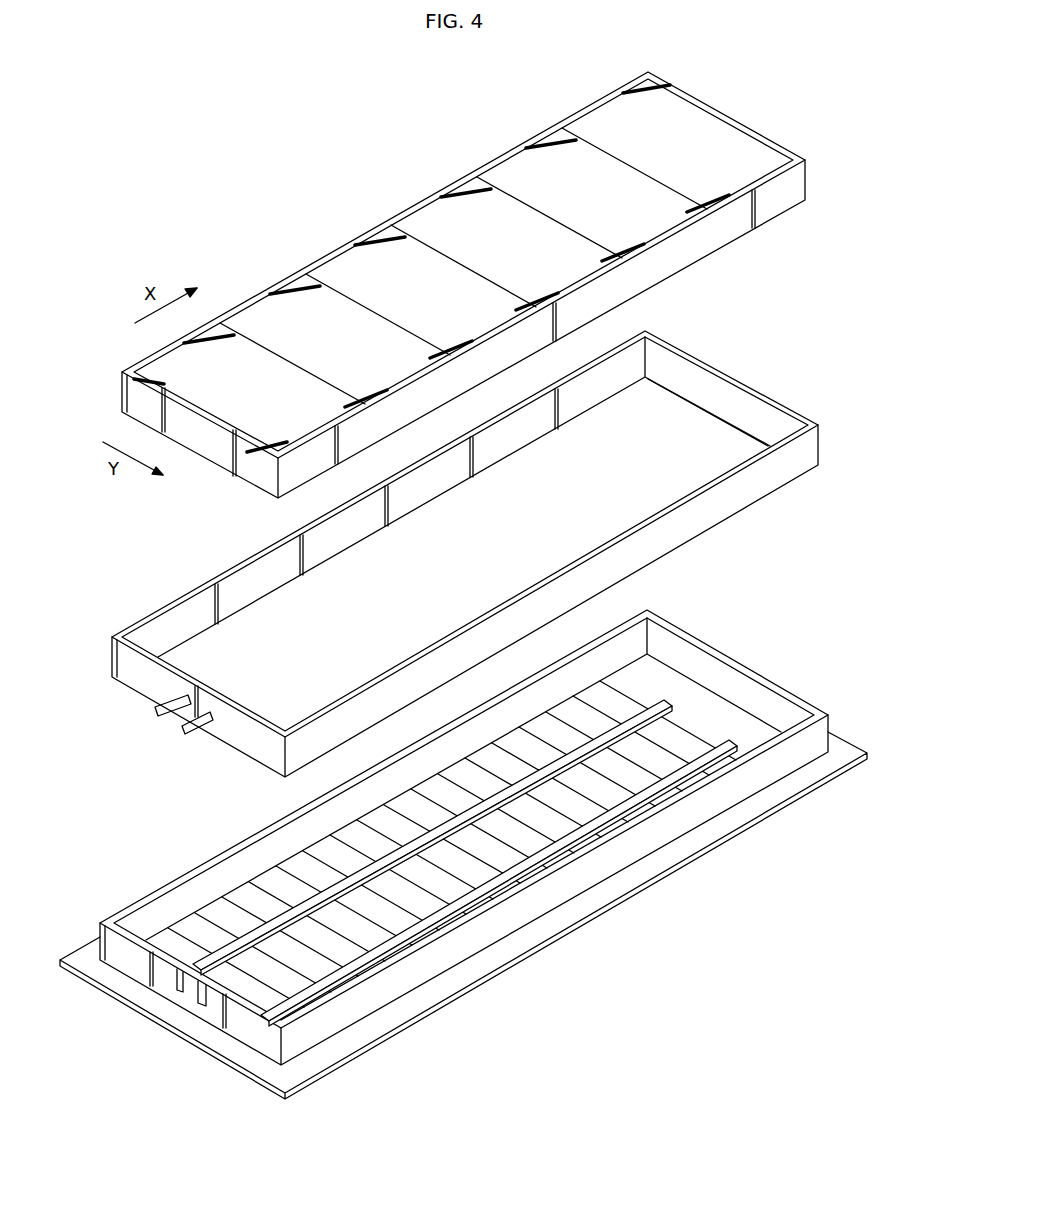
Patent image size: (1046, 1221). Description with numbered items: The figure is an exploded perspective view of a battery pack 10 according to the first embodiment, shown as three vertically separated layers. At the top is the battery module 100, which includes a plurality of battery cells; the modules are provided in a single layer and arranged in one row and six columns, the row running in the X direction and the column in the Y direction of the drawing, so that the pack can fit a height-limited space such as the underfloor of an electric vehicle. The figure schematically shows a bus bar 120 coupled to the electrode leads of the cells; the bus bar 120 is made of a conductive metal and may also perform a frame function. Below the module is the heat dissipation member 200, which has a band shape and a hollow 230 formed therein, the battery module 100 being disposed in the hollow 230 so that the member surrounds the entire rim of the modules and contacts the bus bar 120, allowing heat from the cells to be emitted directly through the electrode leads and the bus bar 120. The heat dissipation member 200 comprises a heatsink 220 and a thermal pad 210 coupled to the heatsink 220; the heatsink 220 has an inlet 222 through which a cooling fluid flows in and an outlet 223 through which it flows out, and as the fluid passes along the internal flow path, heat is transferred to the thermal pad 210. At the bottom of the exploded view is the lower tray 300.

The battery pack 10 is at (318, 160).
The battery module 100 is at (728, 140).
The bus bar 120 is at (658, 268).
The heat dissipation member 200 is at (98, 617).
The thermal pad 210 is at (258, 587).
The heatsink 220 is at (168, 604).
The inlet 222 is at (172, 708).
The outlet 223 is at (187, 725).
The hollow 230 is at (687, 432).
The lower tray 300 is at (677, 853).